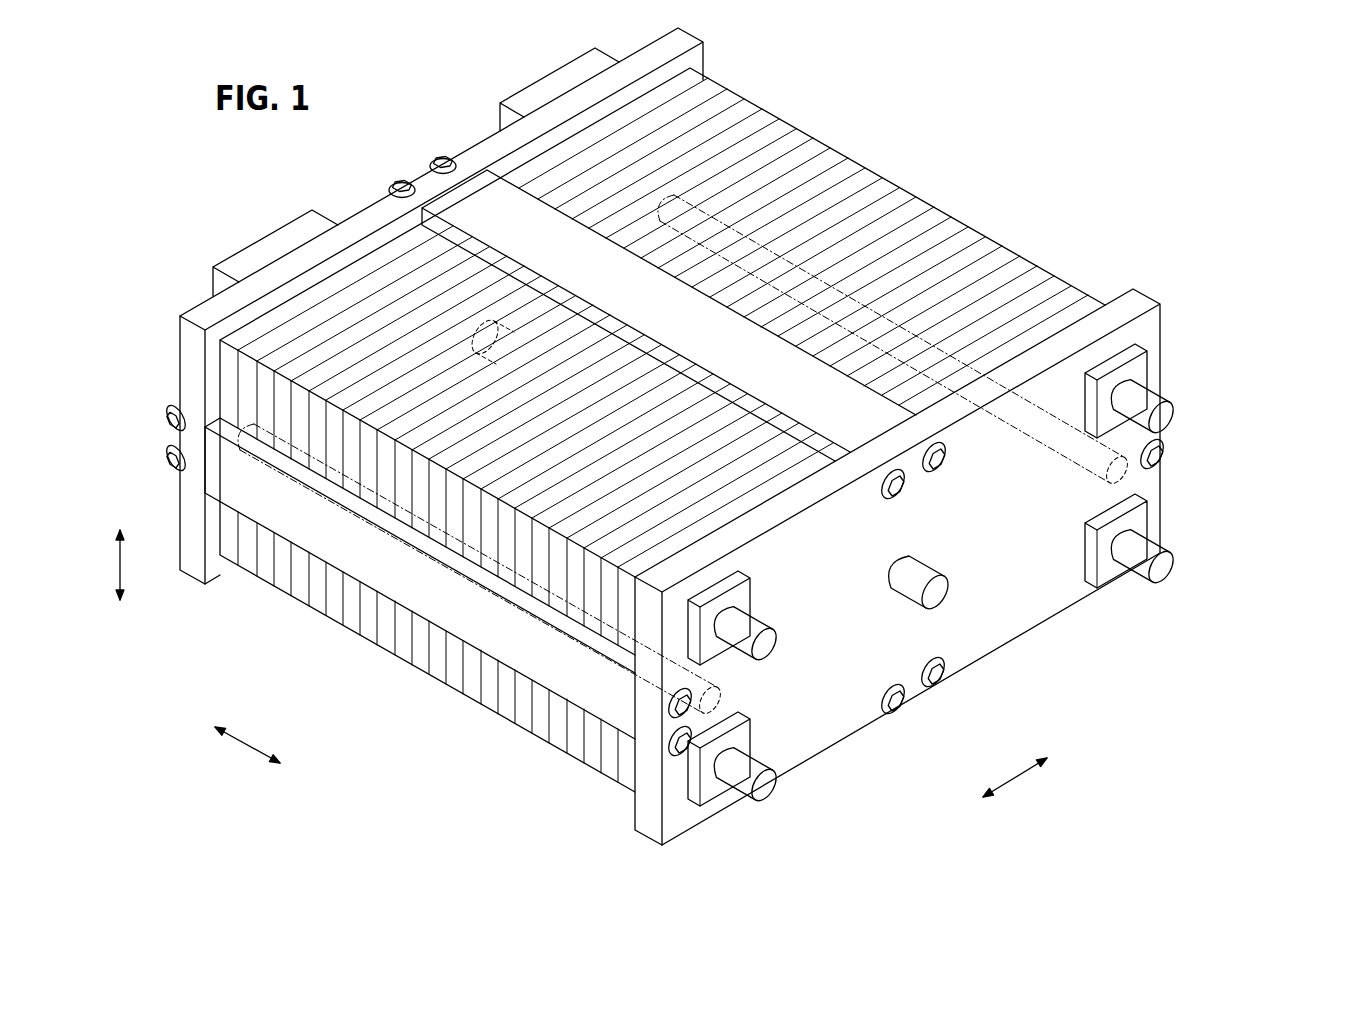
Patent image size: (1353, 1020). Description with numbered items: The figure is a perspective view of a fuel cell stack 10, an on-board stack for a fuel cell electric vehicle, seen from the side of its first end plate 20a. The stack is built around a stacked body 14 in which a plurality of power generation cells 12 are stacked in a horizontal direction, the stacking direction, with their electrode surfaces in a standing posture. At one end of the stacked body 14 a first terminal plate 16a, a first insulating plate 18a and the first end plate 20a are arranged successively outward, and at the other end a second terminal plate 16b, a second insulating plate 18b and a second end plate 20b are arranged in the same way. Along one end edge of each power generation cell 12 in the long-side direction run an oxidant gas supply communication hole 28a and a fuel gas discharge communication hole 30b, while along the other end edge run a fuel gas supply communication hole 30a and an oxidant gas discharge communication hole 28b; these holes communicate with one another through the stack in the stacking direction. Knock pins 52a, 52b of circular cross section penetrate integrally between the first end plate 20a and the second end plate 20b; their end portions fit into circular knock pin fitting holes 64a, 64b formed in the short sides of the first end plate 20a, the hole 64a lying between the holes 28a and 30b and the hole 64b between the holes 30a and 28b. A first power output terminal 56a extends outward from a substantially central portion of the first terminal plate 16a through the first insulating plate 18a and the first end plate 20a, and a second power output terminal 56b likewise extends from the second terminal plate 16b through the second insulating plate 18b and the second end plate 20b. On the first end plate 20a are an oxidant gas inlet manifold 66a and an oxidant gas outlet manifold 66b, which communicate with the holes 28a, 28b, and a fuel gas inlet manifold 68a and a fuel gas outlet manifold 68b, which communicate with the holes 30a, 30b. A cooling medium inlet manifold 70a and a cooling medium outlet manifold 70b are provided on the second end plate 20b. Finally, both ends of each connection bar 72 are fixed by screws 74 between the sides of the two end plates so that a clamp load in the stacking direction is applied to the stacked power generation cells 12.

The fuel cell stack 10 is at (978, 119).
The power generation cell 12 is at (438, 676).
The stacked body 14 is at (673, 435).
The first terminal plate 16a is at (1021, 340).
The second terminal plate 16b is at (352, 283).
The first insulating plate 18a is at (1069, 311).
The second insulating plate 18b is at (385, 262).
The first end plate 20a is at (1150, 292).
The second end plate 20b is at (180, 314).
The oxidant gas supply communication hole 28a is at (791, 618).
The oxidant gas discharge communication hole 28b is at (1182, 554).
The fuel gas supply communication hole 30a is at (1192, 393).
The fuel gas discharge communication hole 30b is at (789, 775).
The knock pin 52a is at (550, 637).
The knock pin 52b is at (1028, 424).
The first power output terminal 56a is at (941, 590).
The second power output terminal 56b is at (497, 318).
The knock pin fitting hole 64a is at (722, 694).
The knock pin fitting hole 64b is at (1106, 471).
The oxidant gas inlet manifold 66a is at (766, 644).
The oxidant gas outlet manifold 66b is at (1161, 572).
The fuel gas inlet manifold 68a is at (1165, 416).
The fuel gas outlet manifold 68b is at (764, 794).
The cooling medium inlet manifold 70a is at (250, 247).
The cooling medium outlet manifold 70b is at (537, 81).
The connection bar 72 is at (476, 190).
The screw 74 is at (437, 158).